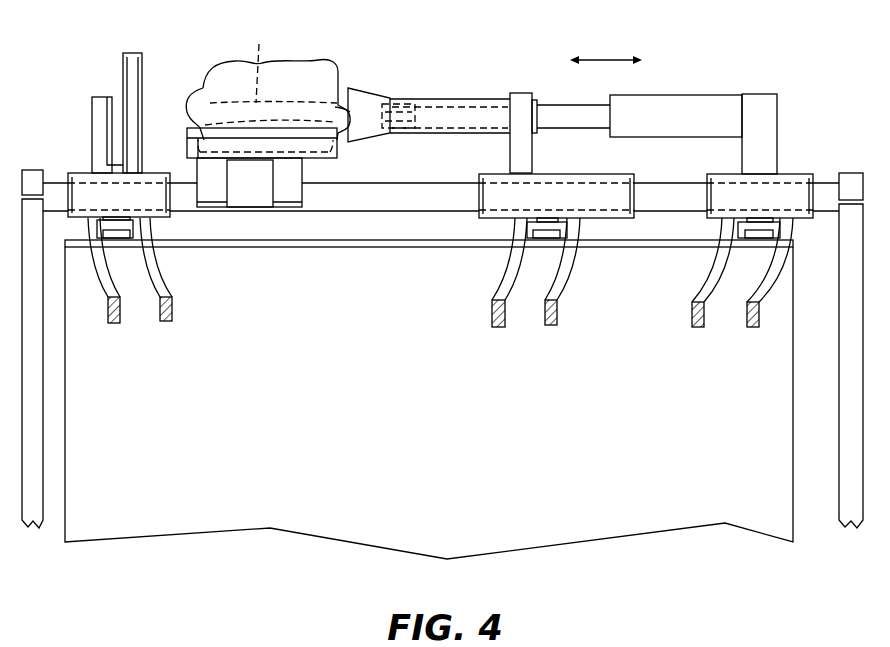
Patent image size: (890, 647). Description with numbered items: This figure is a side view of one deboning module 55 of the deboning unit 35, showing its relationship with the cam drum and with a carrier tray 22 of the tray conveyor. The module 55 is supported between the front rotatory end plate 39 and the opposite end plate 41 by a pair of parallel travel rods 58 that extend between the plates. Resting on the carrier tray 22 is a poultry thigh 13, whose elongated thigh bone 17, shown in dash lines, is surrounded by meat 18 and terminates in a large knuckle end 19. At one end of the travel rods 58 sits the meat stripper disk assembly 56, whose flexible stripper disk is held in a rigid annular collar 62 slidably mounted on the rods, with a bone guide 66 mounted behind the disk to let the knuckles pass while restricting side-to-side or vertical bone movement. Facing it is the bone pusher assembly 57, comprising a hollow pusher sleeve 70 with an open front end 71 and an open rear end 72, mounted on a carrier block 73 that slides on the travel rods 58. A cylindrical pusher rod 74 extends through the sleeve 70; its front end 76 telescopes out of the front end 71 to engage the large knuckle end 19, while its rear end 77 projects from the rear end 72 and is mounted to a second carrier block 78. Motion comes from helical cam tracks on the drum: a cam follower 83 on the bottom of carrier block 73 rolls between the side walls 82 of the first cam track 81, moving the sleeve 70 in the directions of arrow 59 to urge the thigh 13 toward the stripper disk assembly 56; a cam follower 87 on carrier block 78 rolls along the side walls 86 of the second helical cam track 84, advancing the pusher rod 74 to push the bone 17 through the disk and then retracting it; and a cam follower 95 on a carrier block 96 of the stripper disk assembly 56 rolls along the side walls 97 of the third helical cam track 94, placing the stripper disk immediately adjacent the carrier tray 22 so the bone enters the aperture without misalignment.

The poultry thigh 13 is at (280, 115).
The thigh bone 17 is at (265, 63).
The meat 18 is at (268, 87).
The large knuckle end 19 is at (333, 110).
The carrier tray 22 is at (328, 158).
The deboning unit 35 is at (832, 90).
The front rotatory end plate 39 is at (43, 448).
The end plate 41 is at (850, 385).
The deboning module 55 is at (555, 99).
The meat stripper disk assembly 56 is at (125, 96).
The bone pusher assembly 57 is at (673, 90).
The travel rods 58 is at (417, 183).
The arrow 59 is at (600, 55).
The annular collar 62 is at (140, 80).
The bone guide 66 is at (98, 120).
The pusher sleeve 70 is at (447, 100).
The open front end 71 is at (343, 108).
The open rear end 72 is at (540, 98).
The carrier block 73 is at (503, 200).
The pusher rod 74 is at (540, 133).
The front end 76 is at (412, 103).
The rear end 77 is at (606, 137).
The carrier block 78 is at (723, 200).
The first cam track 81 is at (532, 295).
The side walls 82 is at (502, 287).
The cam follower 83 is at (528, 242).
The second helical cam track 84 is at (744, 302).
The side walls 86 is at (712, 283).
The cam follower 87 is at (742, 235).
The third helical cam track 94 is at (171, 301).
The cam follower 95 is at (105, 227).
The carrier block 96 is at (78, 200).
The side walls 97 is at (157, 277).